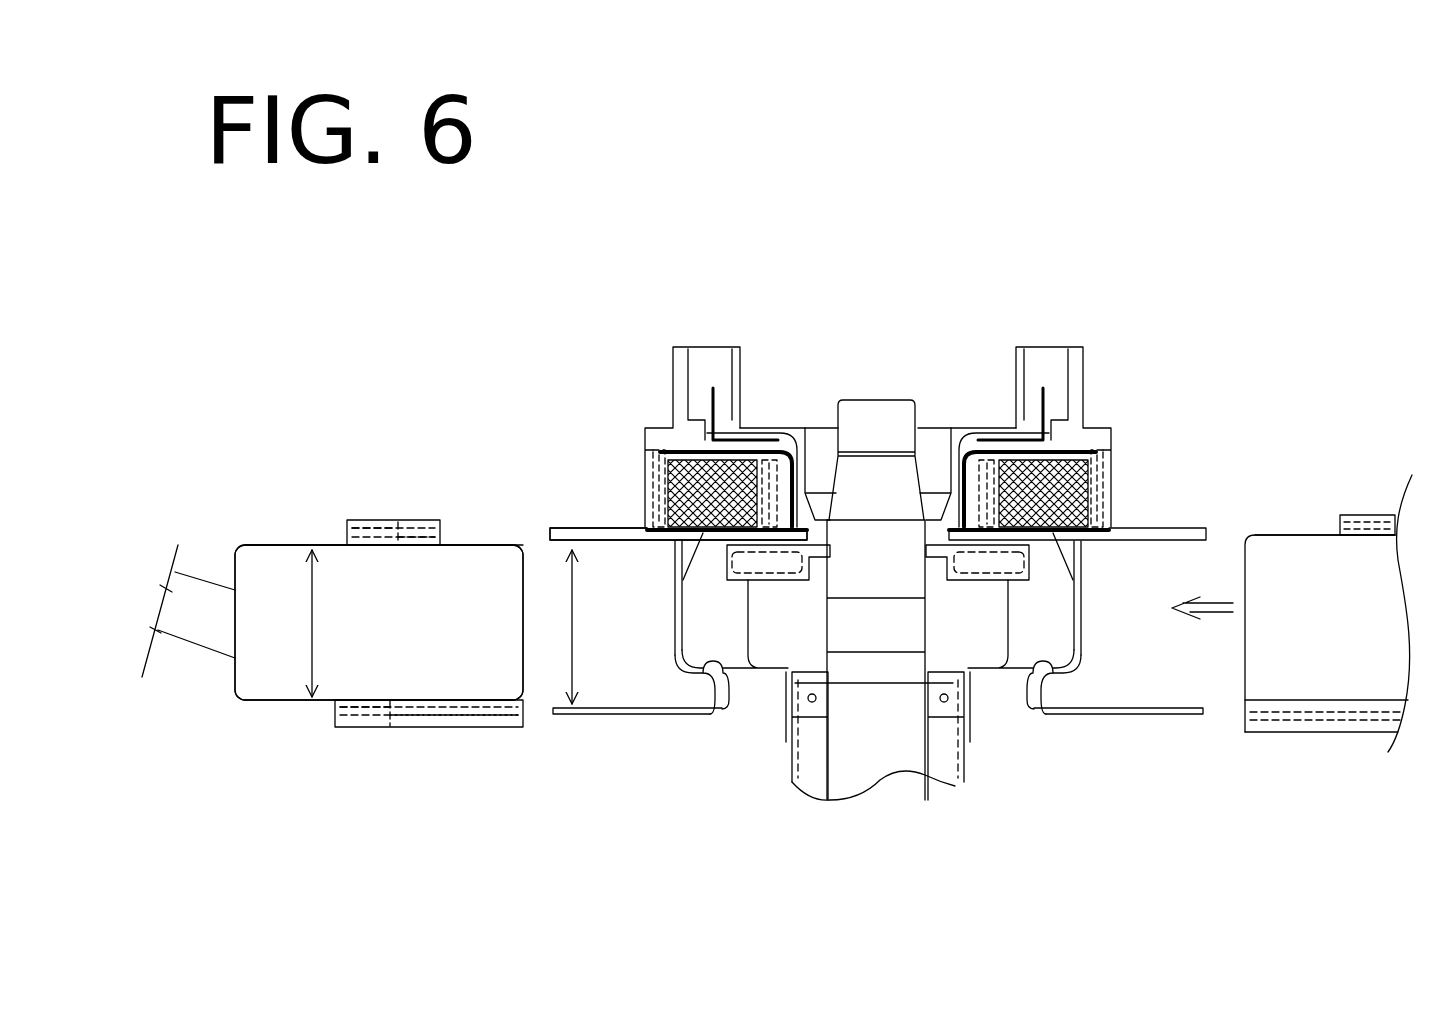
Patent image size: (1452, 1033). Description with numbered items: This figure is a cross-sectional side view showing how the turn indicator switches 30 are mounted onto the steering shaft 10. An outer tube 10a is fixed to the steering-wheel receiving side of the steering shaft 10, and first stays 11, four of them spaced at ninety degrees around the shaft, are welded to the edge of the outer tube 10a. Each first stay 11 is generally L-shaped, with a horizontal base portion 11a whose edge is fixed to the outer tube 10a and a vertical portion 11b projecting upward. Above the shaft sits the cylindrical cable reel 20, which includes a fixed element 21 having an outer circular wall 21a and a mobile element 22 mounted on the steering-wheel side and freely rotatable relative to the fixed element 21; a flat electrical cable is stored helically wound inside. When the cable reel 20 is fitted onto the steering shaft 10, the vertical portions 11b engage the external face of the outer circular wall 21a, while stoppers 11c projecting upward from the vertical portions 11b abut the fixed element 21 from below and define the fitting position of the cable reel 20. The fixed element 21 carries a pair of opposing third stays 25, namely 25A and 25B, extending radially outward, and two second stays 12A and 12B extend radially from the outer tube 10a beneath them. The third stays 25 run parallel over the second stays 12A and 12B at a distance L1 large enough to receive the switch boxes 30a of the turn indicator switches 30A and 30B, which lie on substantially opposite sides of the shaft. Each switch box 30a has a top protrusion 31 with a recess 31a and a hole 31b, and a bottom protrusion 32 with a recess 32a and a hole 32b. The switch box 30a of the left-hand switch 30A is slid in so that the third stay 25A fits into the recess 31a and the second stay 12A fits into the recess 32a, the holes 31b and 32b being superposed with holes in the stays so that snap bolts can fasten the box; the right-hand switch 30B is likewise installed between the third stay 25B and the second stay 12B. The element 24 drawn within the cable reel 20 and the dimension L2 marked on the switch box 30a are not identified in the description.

The steering shaft 10 is at (880, 640).
The outer tube 10a is at (792, 750).
The first stay 11 is at (677, 668).
The horizontal base portion 11a is at (712, 714).
The vertical portion 11b is at (677, 627).
The stopper 11c is at (683, 550).
The second stay 12A is at (627, 714).
The second stay 12B is at (1102, 714).
The cable reel 20 is at (950, 420).
The fixed element 21 is at (748, 537).
The outer circular wall 21a is at (643, 480).
The mobile element 22 is at (662, 420).
The coil end plate 24 is at (647, 450).
The third stay 25 is at (557, 524).
The third stay 25A is at (590, 527).
The third stay 25B is at (1153, 526).
The turn indicator switch 30 is at (312, 705).
The turn indicator switch 30A is at (258, 700).
The turn indicator switch 30B is at (1262, 530).
The switch box 30a is at (287, 545).
The second protrusion 31 is at (413, 520).
The second recess 31a is at (358, 510).
The second hole 31b is at (395, 520).
The first protrusion 32 is at (490, 727).
The first recess 32a is at (368, 735).
The first hole 32b is at (410, 730).
The distance L1 is at (572, 627).
The connector height dimension L2 is at (309, 623).